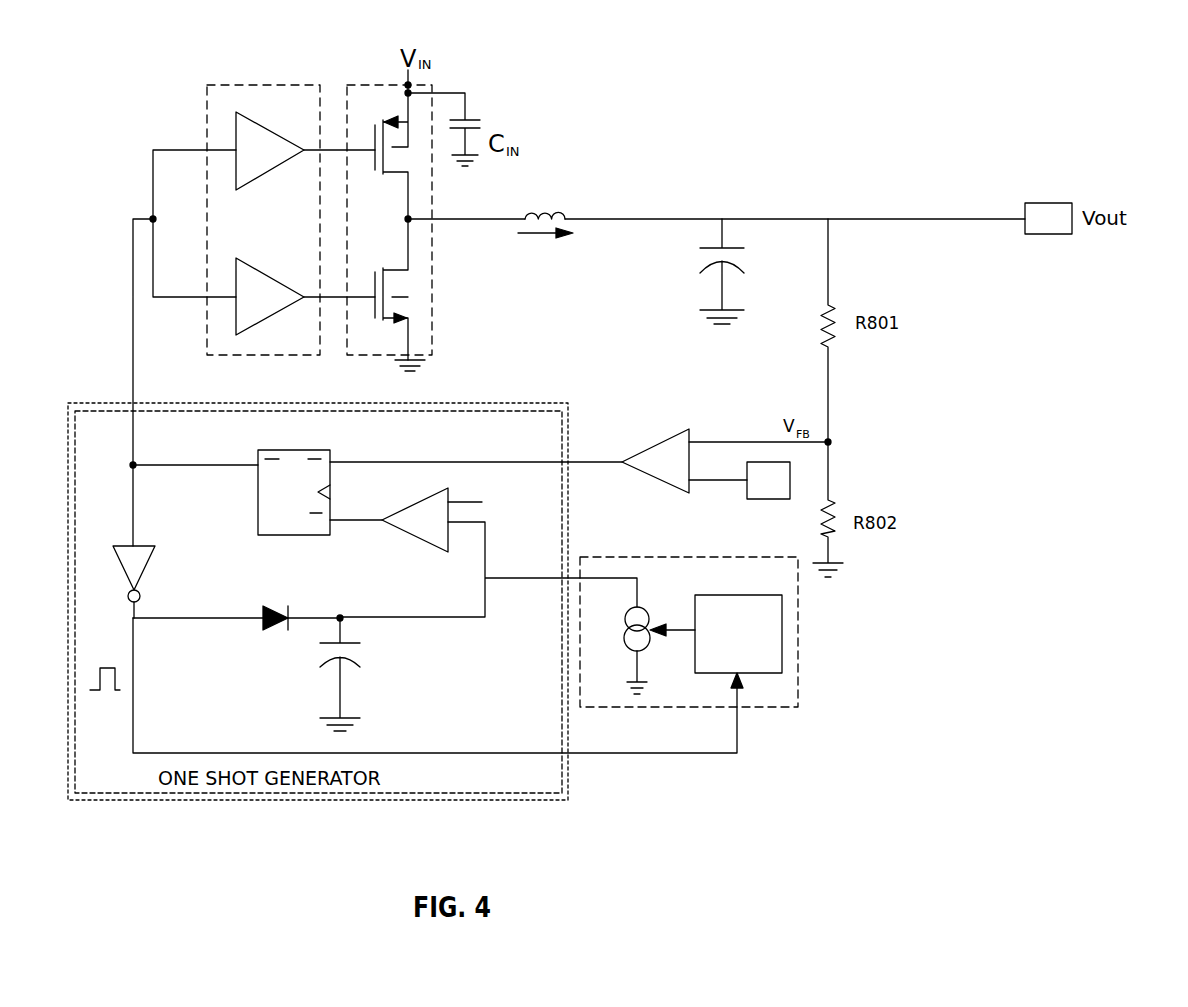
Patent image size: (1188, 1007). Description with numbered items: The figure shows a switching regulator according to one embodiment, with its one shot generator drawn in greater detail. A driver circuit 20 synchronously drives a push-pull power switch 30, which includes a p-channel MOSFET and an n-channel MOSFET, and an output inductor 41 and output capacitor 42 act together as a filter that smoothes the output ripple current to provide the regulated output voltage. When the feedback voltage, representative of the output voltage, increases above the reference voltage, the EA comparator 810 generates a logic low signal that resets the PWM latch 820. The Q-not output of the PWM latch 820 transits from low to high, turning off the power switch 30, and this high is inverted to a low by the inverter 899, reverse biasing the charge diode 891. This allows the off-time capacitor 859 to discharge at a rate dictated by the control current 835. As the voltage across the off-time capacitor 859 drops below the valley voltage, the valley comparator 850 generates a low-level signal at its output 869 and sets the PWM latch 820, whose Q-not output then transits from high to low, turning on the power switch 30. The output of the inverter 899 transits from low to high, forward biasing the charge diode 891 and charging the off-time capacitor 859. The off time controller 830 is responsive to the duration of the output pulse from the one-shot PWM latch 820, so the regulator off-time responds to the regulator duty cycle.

The driver circuit 20 is at (237, 84).
The power switch 30 is at (382, 84).
The output inductor 41 is at (565, 195).
The output capacitor 42 is at (718, 263).
The EA comparator 810 is at (670, 438).
The PWM latch 820 is at (278, 449).
The off time controller 830 is at (767, 673).
The control current 835 is at (640, 605).
The valley comparator 850 is at (425, 495).
The off-time capacitor 859 is at (365, 653).
The comparator output 869 is at (375, 530).
The charge diode 891 is at (272, 604).
The inverter 899 is at (140, 546).